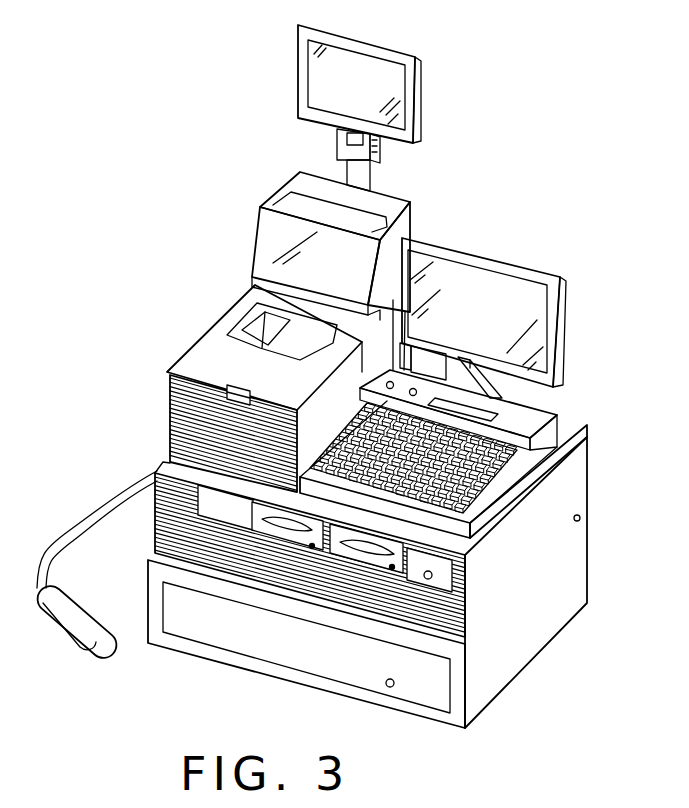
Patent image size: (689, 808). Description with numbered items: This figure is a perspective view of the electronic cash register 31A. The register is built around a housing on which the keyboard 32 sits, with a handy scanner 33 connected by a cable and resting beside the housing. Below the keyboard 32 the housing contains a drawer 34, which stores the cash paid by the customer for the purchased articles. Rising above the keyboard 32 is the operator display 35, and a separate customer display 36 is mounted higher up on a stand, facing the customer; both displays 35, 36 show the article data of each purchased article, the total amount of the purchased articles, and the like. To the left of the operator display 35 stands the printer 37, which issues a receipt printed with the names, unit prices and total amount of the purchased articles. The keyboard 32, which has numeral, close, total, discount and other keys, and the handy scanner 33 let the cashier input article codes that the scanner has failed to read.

The electronic cash register 31A is at (580, 158).
The keyboard 32 is at (520, 463).
The handy scanner 33 is at (73, 634).
The drawer 34 is at (248, 637).
The operator display 35 is at (504, 298).
The customer display 36 is at (405, 107).
The printer 37 is at (247, 325).